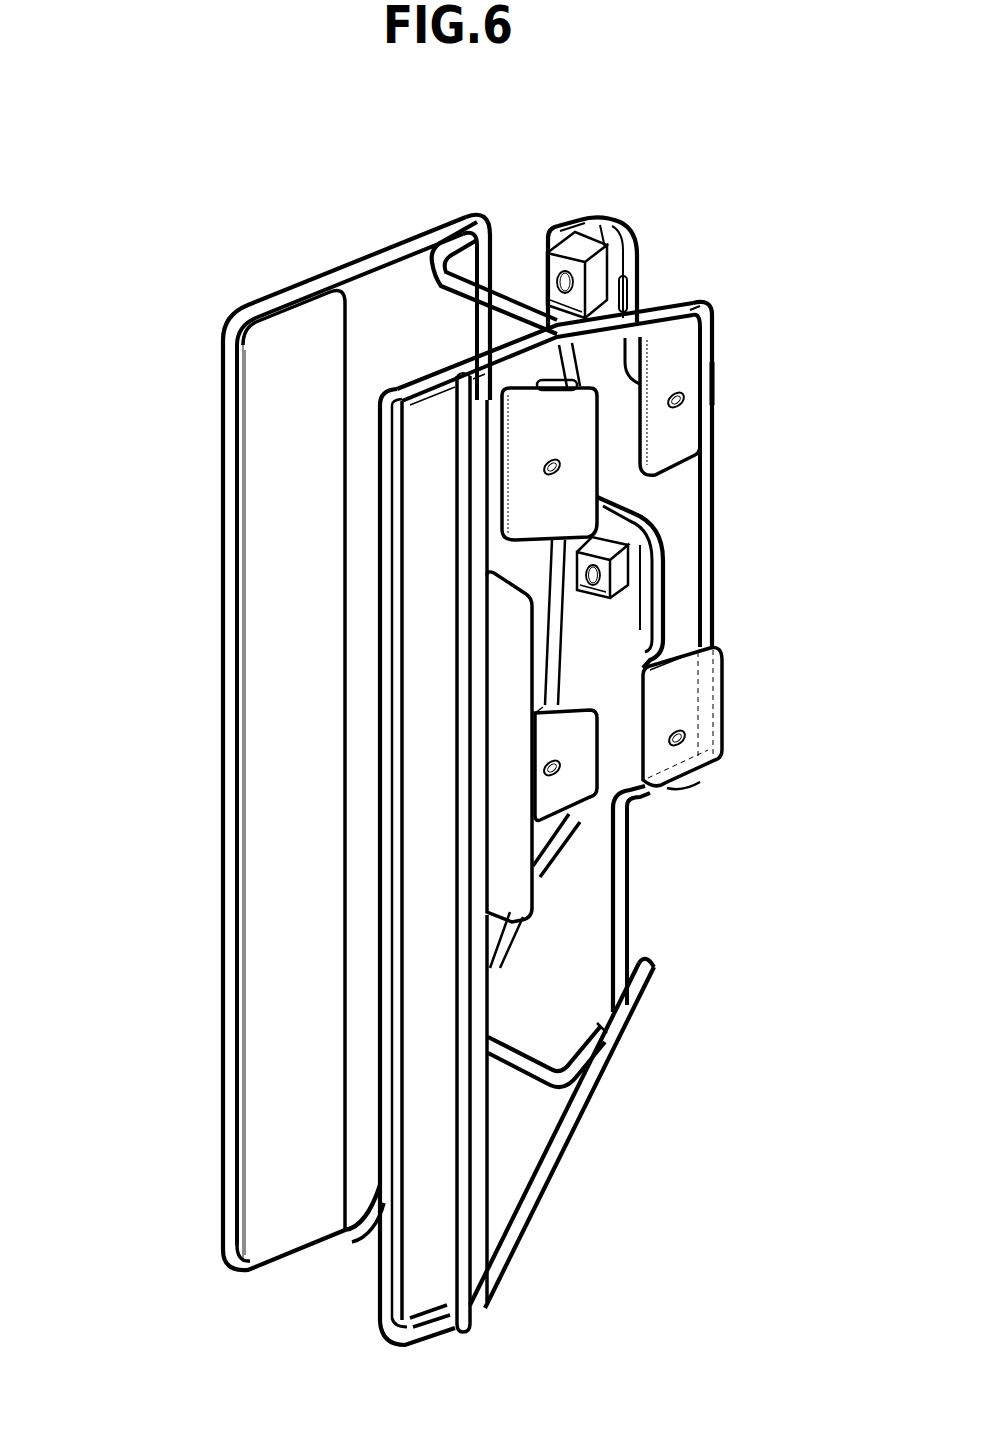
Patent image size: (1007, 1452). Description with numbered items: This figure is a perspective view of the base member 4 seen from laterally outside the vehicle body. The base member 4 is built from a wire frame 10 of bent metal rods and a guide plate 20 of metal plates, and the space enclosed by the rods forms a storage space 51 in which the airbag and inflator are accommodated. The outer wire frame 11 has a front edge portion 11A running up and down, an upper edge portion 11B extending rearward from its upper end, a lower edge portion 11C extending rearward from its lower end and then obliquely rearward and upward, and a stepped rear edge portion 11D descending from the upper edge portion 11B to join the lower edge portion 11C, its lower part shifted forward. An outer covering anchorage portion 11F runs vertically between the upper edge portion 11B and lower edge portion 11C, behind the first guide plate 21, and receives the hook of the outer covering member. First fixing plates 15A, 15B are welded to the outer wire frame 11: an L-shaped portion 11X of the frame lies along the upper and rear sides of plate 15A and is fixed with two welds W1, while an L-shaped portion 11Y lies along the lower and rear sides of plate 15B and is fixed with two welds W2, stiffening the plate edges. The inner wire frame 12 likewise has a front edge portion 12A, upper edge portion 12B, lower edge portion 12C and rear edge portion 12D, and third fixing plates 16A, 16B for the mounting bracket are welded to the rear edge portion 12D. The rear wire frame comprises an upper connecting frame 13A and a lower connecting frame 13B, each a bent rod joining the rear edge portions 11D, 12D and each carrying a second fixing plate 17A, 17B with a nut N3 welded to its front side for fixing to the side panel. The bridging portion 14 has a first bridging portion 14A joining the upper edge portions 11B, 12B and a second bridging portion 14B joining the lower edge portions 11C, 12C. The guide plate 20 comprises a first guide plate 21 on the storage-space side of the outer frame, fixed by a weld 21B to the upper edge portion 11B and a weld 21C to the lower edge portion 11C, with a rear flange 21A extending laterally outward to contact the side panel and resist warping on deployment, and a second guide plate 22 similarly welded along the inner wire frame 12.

The base member 4 is at (195, 216).
The wire frame 10 is at (715, 234).
The outer wire frame 11 is at (390, 393).
The front edge portion 11A is at (395, 940).
The upper edge portion 11B is at (436, 383).
The lower edge portion 11C is at (533, 1213).
The rear edge portion 11D is at (713, 502).
The outer covering anchorage portion 11F is at (465, 1152).
The L-shaped portion 11X is at (733, 314).
The L-shaped portion 11Y is at (728, 777).
The inner wire frame 12 is at (229, 329).
The front edge portion 12A is at (235, 612).
The upper edge portion 12B is at (373, 258).
The lower edge portion 12C is at (370, 1195).
The rear edge portion 12D is at (498, 260).
The upper connecting frame 13A is at (625, 235).
The lower connecting frame 13B is at (617, 495).
The bridging portion 14 is at (540, 614).
The first bridging portion 14A is at (510, 297).
The second bridging portion 14B is at (520, 1057).
The first fixing plate 15A is at (695, 375).
The first fixing plate 15B is at (695, 692).
The third fixing plate 16A is at (585, 445).
The third fixing plate 16B is at (583, 737).
The second fixing plate 17A is at (612, 278).
The second fixing plate 17B is at (637, 556).
The guide plate 20 is at (112, 820).
The first guide plate 21 is at (415, 838).
The flange 21A is at (512, 872).
The weld 21B is at (437, 407).
The weld 21C is at (432, 1322).
The second guide plate 22 is at (265, 797).
The storage space 51 is at (306, 463).
The nut N3 is at (578, 258).
The weld W1 is at (700, 312).
The weld W2 is at (722, 712).